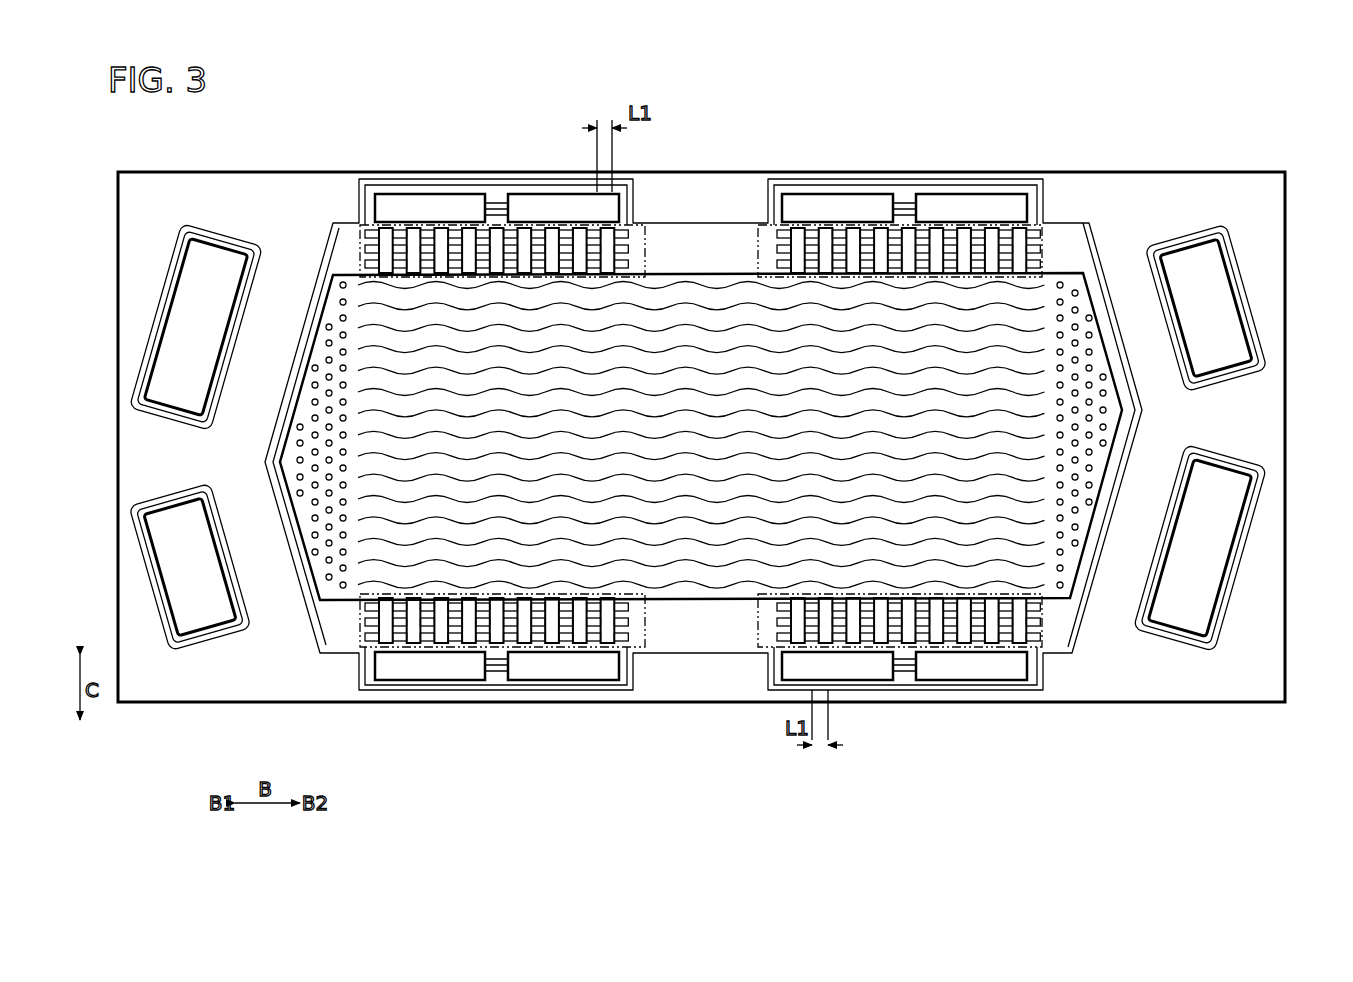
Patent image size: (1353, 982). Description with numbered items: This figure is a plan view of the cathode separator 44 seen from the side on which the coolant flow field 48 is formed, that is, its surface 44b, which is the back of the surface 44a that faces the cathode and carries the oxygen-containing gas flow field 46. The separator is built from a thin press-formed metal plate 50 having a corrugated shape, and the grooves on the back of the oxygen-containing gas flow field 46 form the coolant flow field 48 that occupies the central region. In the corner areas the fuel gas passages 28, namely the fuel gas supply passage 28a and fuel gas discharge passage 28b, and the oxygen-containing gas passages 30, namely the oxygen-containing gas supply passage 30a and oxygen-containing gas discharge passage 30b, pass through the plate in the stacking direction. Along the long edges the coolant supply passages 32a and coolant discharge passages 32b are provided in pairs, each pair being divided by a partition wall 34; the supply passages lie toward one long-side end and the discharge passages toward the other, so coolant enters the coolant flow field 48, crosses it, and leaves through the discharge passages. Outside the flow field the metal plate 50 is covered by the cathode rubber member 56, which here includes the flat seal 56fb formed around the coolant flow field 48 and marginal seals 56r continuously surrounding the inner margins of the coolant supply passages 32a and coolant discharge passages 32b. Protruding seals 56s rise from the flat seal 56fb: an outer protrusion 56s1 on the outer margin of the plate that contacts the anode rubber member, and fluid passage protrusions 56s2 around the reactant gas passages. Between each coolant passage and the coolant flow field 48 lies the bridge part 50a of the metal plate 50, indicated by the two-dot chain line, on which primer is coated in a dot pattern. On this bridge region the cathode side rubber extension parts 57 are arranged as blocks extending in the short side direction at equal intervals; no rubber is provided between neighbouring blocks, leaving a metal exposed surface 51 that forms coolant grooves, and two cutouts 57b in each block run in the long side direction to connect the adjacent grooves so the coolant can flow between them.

The cathode separator 44 is at (1138, 96).
The surface 44a is at (1262, 440).
The surface 44b is at (1262, 397).
The oxygen-containing gas supply passage 30a is at (207, 265).
The oxygen-containing gas discharge passage 30b is at (1197, 612).
The oxygen-containing gas passages 30 is at (697, 439).
The fuel gas supply passage 28a is at (1197, 258).
The fuel gas discharge passage 28b is at (200, 607).
The fuel gas passages 28 is at (698, 436).
The cathode rubber member 56 is at (672, 482).
The flat seal 56fb is at (150, 452).
The protruding seals 56s is at (699, 430).
The outer protrusion 56s1 is at (770, 198).
The fluid passage protrusions 56s2 is at (699, 436).
The marginal seals 56r is at (702, 439).
The metal plate 50 is at (701, 457).
The bridge part 50a is at (702, 438).
The coolant flow field 48 is at (678, 537).
The oxygen-containing gas flow field 46 is at (705, 550).
The cathode side rubber extension parts 57 is at (702, 438).
The cutouts 57b is at (402, 245).
The coolant supply passages 32a is at (386, 200).
The coolant discharge passages 32b is at (830, 205).
The partition wall 34 is at (497, 210).
The metal exposed surface 51 is at (582, 240).